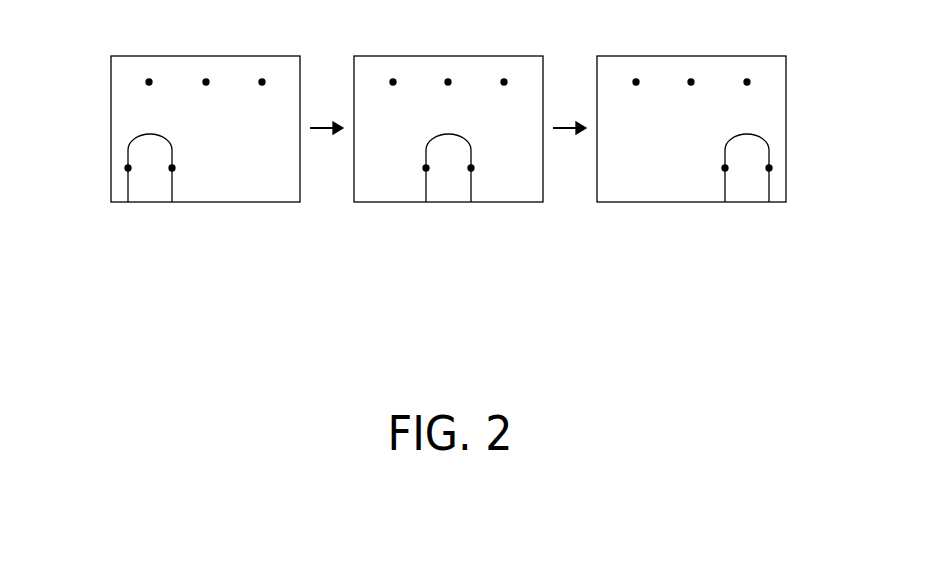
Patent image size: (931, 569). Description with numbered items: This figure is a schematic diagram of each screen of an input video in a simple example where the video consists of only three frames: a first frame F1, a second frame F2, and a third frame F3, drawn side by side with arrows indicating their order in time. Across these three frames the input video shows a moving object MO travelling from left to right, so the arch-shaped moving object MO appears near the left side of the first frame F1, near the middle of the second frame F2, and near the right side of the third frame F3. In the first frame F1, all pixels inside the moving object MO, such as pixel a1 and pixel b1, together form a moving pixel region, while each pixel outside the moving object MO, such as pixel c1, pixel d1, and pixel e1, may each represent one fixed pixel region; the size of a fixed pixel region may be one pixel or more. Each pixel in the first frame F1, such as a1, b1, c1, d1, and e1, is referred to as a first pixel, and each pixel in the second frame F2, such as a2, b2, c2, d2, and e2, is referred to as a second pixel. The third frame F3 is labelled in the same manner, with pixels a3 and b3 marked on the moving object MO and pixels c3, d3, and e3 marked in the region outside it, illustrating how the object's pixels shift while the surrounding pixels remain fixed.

The first frame F1 is at (205, 158).
The second frame F2 is at (448, 158).
The third frame F3 is at (691, 158).
The moving object MO is at (145, 155).
The pixel a1 is at (128, 168).
The pixel b1 is at (172, 168).
The pixel c1 is at (150, 78).
The pixel d1 is at (207, 78).
The pixel e1 is at (263, 78).
The pixel a2 is at (426, 168).
The pixel b2 is at (471, 168).
The pixel c2 is at (394, 78).
The pixel d2 is at (449, 78).
The pixel e2 is at (505, 78).
The first feature point of moving object in frame F3 a3 is at (725, 168).
The second feature point of moving object in frame F3 b3 is at (769, 168).
The first static feature point in frame F3 c3 is at (637, 78).
The second static feature point in frame F3 d3 is at (692, 78).
The third static feature point in frame F3 e3 is at (748, 78).